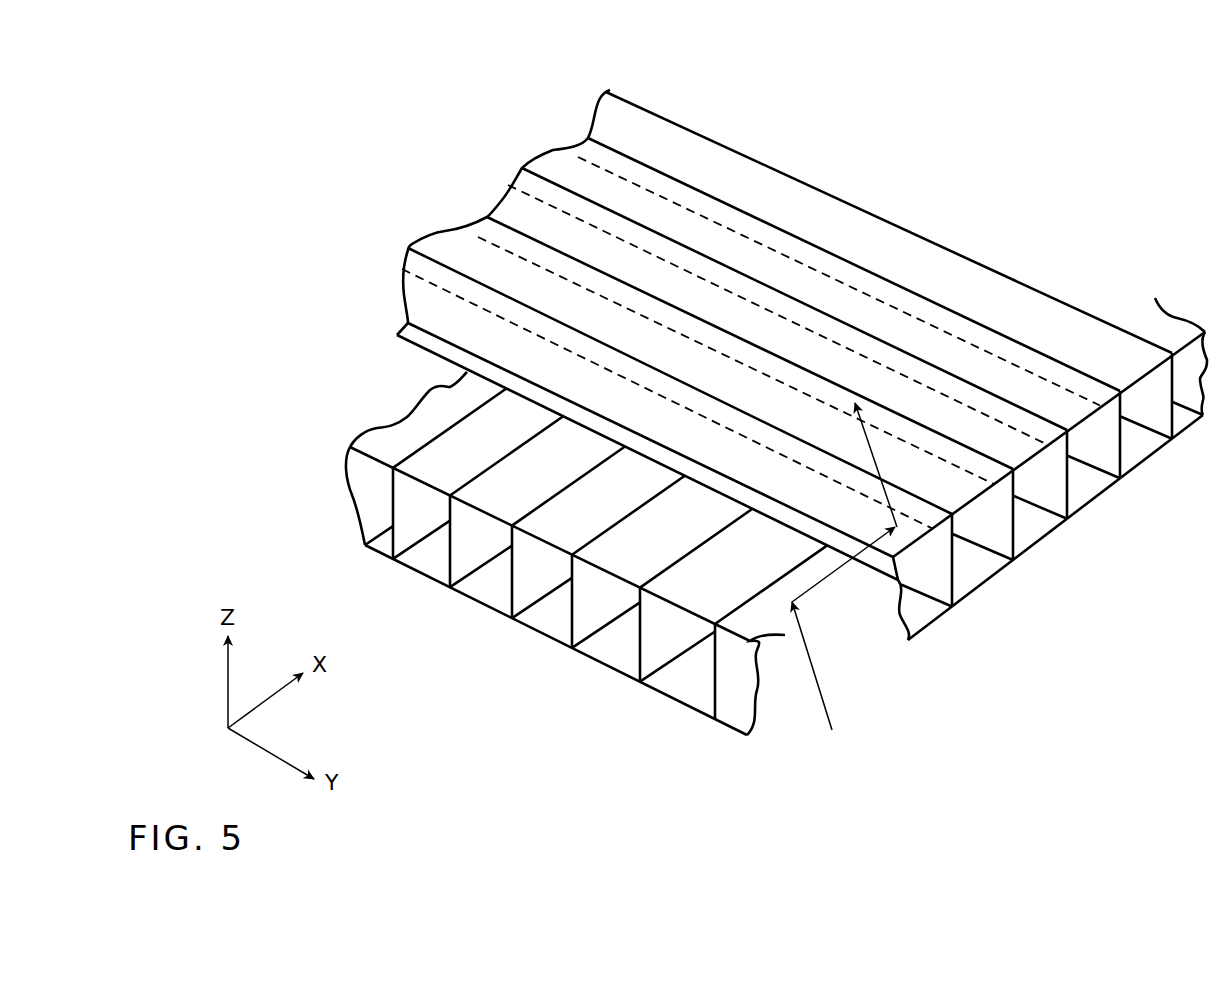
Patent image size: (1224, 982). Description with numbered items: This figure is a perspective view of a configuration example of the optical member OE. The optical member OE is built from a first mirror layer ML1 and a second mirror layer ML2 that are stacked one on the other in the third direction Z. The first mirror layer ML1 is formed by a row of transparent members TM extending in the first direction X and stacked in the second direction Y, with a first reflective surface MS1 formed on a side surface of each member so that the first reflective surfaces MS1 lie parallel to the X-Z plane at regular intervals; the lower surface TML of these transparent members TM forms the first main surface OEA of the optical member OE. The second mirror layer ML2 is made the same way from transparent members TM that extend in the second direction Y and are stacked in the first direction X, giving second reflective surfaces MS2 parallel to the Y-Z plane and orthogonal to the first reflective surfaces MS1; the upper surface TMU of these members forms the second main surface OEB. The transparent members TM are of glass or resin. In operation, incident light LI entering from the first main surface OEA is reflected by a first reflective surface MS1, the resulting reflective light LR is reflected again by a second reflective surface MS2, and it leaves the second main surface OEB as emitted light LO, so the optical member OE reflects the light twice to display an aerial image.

The optical member OE is at (1050, 137).
The second main surface OEB is at (643, 201).
The first main surface OEA is at (585, 658).
The transparent member TM is at (1087, 334).
The upper surface TMU is at (1034, 317).
The lower surface TML is at (430, 584).
The first mirror layer ML1 is at (355, 536).
The second mirror layer ML2 is at (383, 295).
The first reflective surface MS1 is at (408, 528).
The second reflective surface MS2 is at (1073, 474).
The incident light LI is at (816, 666).
The reflective light LR is at (843, 566).
The emitted light LO is at (881, 465).